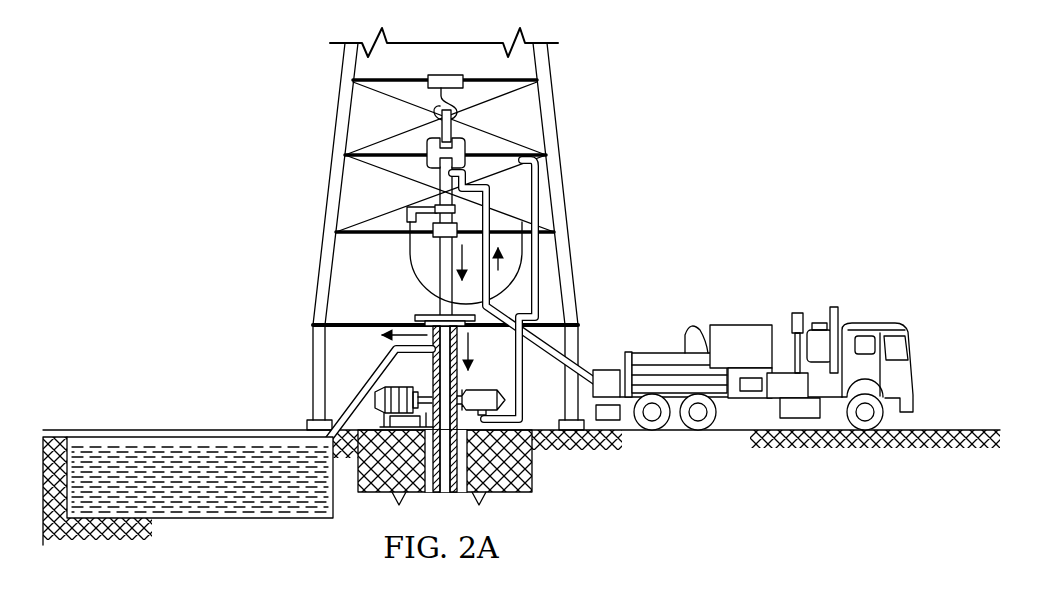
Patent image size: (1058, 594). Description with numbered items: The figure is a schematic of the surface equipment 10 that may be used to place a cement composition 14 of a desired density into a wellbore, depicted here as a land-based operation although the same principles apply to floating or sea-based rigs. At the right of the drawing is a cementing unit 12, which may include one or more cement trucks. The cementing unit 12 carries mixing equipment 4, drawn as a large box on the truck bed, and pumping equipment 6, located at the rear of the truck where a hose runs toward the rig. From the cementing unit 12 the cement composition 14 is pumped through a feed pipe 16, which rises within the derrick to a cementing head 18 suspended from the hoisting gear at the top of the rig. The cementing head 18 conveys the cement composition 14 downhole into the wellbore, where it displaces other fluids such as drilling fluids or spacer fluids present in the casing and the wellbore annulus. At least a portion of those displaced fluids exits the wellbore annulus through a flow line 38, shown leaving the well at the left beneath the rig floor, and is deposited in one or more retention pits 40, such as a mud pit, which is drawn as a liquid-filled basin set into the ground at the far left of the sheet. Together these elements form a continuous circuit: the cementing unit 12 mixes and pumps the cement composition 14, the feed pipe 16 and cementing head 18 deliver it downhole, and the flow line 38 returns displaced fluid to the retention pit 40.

The surface equipment 10 is at (134, 80).
The cementing head 18 is at (476, 142).
The cement composition 14 is at (458, 258).
The mixing equipment 4 is at (742, 332).
The cementing unit 12 is at (771, 349).
The pumping equipment 6 is at (608, 370).
The flow line 38 is at (366, 388).
The feed pipe 16 is at (526, 350).
The retention pit 40 is at (187, 490).